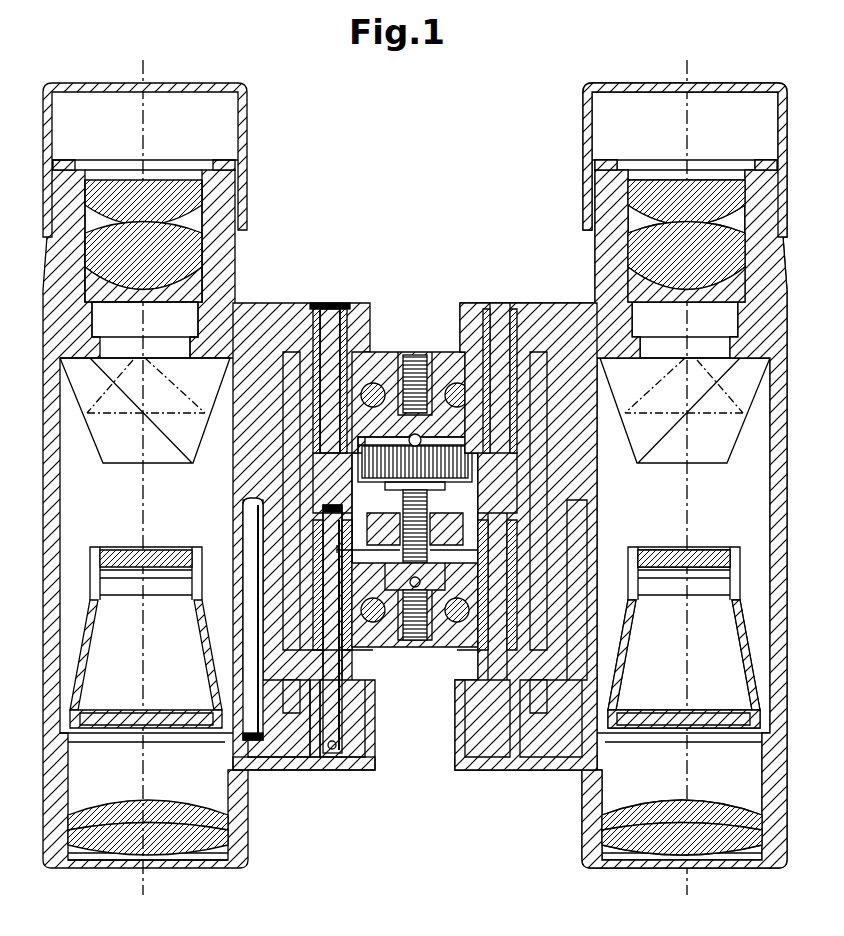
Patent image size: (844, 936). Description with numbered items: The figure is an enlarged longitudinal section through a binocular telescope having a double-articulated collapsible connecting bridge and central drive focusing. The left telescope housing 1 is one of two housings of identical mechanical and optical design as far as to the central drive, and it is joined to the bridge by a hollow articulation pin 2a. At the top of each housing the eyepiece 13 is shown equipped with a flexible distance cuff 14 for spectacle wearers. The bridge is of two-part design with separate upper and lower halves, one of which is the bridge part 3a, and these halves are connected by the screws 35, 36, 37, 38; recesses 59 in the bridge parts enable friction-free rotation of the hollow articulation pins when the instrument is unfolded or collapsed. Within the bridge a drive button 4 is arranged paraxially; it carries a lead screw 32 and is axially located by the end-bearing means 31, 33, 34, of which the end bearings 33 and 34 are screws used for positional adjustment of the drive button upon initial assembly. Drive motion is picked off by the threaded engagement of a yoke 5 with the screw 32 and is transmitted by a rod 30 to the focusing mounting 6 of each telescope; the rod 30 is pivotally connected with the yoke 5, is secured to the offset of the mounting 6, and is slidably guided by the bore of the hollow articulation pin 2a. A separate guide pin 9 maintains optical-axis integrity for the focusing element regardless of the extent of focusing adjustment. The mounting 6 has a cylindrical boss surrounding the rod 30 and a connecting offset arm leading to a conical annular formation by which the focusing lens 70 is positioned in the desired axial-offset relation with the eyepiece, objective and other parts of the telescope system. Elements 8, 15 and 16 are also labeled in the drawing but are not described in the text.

The telescope housing 1 is at (44, 465).
The hollow articulation pin 2a is at (310, 681).
The bridge part 3a is at (390, 352).
The drive button 4 is at (460, 464).
The yoke 5 is at (366, 522).
The focusing mounting 6 is at (314, 748).
The field lens 8 is at (99, 587).
The guide pin 9 is at (250, 523).
The eyepiece 13 is at (253, 182).
The flexible distance cuff 14 is at (249, 125).
The hinge housing 15 is at (357, 303).
The bottom plate 16 is at (373, 744).
The rod 30 is at (332, 758).
The end-bearing means 31 is at (409, 583).
The lead screw 32 is at (428, 500).
The end bearing screw 33 is at (421, 648).
The end bearing screw 34 is at (404, 352).
The screw 35 is at (457, 622).
The screw 36 is at (384, 628).
The screw 37 is at (455, 383).
The screw 38 is at (373, 383).
The recess 59 is at (310, 387).
The focusing lens 70 is at (122, 547).